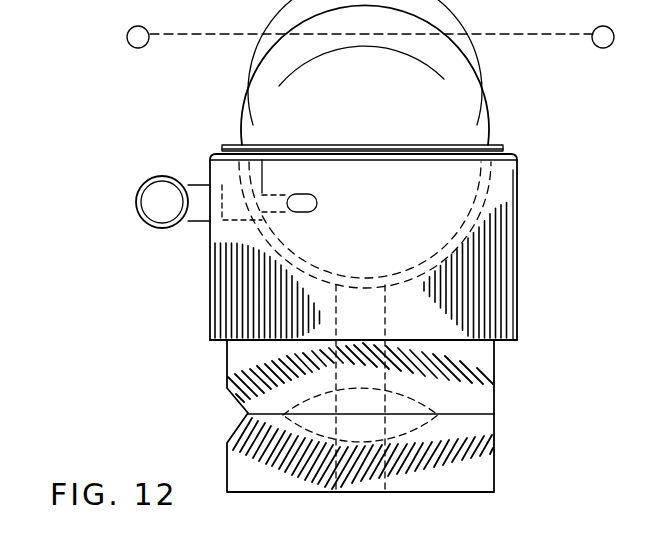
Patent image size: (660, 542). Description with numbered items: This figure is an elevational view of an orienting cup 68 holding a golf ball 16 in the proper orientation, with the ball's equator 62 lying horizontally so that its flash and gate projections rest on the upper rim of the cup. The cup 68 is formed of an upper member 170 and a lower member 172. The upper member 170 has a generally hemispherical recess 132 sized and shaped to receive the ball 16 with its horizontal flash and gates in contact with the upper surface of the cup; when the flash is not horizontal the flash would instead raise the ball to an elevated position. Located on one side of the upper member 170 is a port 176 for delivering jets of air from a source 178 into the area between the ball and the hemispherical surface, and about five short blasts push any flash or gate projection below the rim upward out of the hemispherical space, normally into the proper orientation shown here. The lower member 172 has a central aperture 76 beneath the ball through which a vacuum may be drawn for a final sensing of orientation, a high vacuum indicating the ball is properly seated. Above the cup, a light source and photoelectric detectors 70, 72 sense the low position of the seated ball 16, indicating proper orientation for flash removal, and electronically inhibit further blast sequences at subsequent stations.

The golf ball 16 is at (454, 78).
The equator 62 is at (408, 145).
The orienting cup 68 is at (518, 244).
The photoelectric detector 70 is at (133, 48).
The photoelectric detector 72 is at (613, 43).
The central aperture 76 is at (366, 474).
The hemispherical recess 132 is at (508, 183).
The upper member 170 is at (509, 304).
The lower member 172 is at (488, 388).
The port 176 is at (262, 160).
The source 178 is at (148, 228).